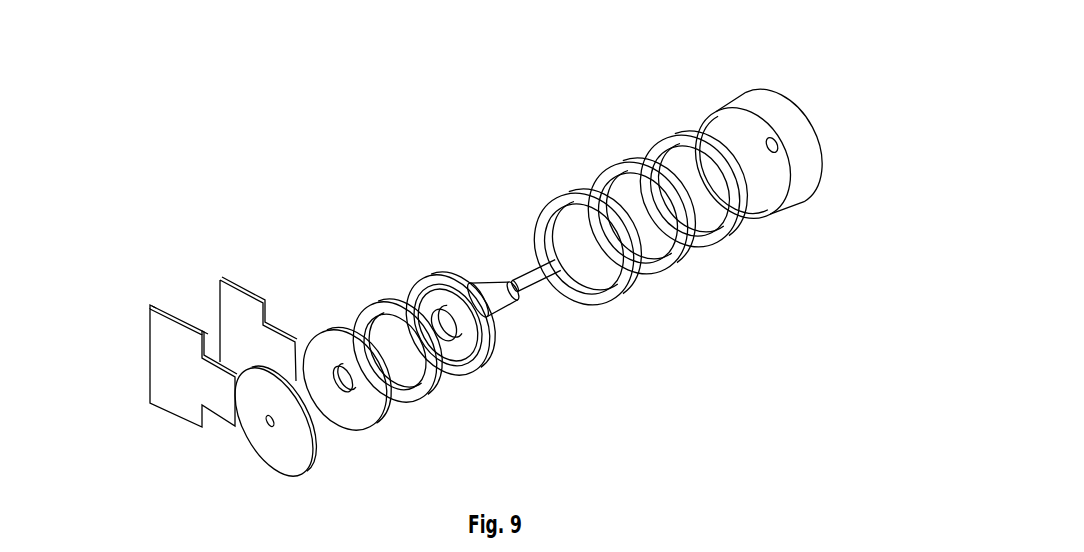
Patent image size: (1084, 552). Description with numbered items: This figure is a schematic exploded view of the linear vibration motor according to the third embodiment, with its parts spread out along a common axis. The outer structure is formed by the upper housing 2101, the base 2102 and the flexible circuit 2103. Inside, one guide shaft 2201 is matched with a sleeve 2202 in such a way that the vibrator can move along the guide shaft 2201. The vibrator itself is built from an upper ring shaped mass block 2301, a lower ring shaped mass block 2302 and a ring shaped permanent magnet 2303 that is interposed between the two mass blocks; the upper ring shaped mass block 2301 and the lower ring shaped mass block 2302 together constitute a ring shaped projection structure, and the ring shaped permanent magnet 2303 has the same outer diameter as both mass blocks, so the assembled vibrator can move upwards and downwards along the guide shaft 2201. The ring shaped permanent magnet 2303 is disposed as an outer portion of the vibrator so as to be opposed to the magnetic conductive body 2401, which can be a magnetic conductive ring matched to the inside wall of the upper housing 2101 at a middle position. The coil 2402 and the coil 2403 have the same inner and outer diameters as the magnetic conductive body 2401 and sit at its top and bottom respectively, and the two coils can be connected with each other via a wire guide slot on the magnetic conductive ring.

The upper housing 2101 is at (802, 190).
The base 2102 is at (172, 365).
The flexible circuit 2103 is at (240, 305).
The guide shaft 2201 is at (530, 273).
The sleeve 2202 is at (515, 303).
The upper ring shaped mass block 2301 is at (330, 330).
The lower ring shaped mass block 2302 is at (433, 274).
The ring shaped permanent magnet 2303 is at (435, 378).
The magnetic conductive body 2401 is at (757, 218).
The coil 2402 is at (613, 163).
The coil 2403 is at (633, 275).